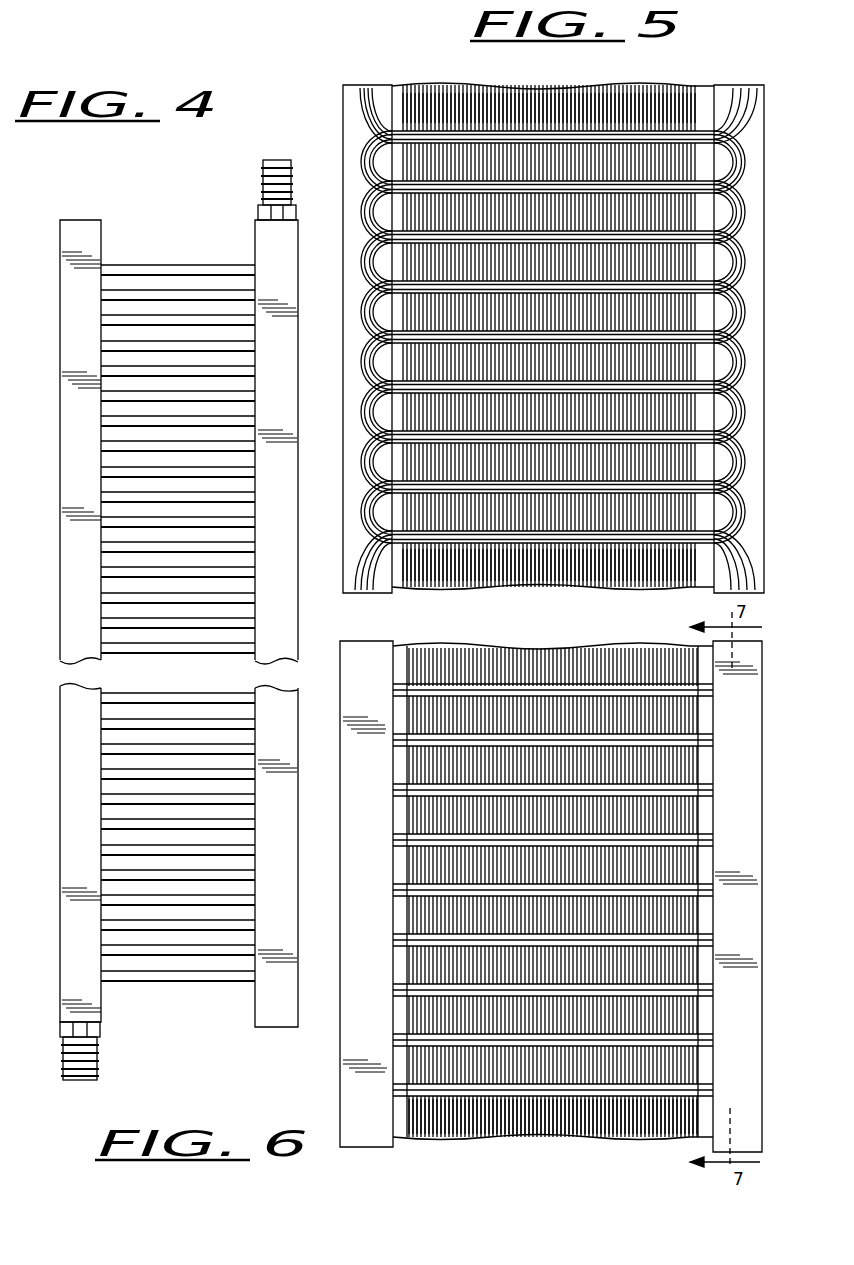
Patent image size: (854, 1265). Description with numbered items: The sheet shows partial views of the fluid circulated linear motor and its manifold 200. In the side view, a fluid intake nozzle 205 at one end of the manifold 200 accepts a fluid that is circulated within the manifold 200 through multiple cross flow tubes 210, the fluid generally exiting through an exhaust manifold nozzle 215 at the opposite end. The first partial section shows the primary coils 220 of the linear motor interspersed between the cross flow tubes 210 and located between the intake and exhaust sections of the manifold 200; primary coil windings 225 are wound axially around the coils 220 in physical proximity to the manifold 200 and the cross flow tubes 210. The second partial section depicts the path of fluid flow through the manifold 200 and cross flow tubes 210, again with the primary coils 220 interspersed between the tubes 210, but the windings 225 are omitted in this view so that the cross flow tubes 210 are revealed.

In FIG. 4, the manifold 200 is at (206, 234).
In FIG. 5, the manifold 200 is at (352, 340).
In FIG. 6, the manifold 200 is at (367, 657).
In FIG. 4, the fluid intake nozzle 205 is at (98, 1048).
In FIG. 4, the cross flow tubes 210 is at (163, 922).
In FIG. 6, the cross flow tubes 210 is at (412, 690).
In FIG. 4, the exhaust manifold nozzle 215 is at (257, 175).
In FIG. 5, the primary coils 220 is at (549, 336).
In FIG. 6, the primary coils 220 is at (553, 892).
In FIG. 5, the primary coil windings 225 is at (352, 205).